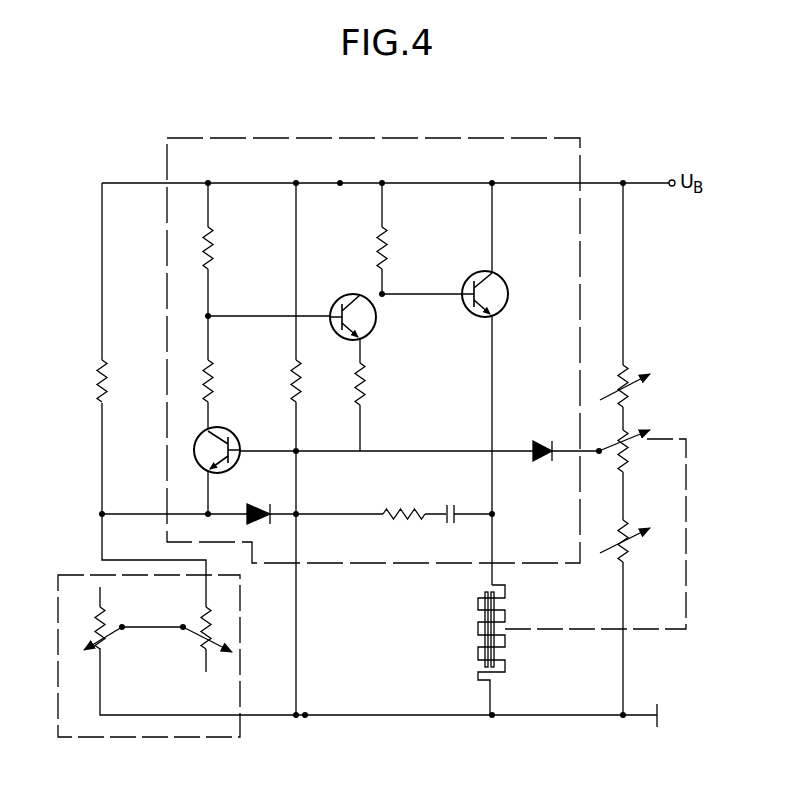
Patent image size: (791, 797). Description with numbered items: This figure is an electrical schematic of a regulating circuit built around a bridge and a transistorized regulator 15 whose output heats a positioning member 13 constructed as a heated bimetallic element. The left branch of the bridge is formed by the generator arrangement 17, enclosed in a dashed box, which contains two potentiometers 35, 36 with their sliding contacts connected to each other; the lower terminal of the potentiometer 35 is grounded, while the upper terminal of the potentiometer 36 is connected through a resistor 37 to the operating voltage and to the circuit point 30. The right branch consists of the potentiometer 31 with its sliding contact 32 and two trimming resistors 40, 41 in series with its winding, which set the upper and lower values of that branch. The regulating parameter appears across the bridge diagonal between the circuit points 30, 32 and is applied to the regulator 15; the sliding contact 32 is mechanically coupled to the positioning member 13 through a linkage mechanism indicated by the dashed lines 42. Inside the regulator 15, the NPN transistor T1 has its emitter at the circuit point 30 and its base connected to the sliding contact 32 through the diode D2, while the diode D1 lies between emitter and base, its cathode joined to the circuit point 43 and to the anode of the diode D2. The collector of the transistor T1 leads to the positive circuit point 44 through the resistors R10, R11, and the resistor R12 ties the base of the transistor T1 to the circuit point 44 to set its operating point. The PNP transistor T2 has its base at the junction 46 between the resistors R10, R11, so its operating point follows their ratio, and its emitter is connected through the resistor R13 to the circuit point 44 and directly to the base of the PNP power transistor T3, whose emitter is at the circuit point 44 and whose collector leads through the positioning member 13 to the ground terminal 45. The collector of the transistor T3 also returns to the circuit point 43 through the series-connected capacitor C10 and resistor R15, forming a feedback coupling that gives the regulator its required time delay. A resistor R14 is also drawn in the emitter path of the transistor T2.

The regulator 15 is at (514, 150).
The generator arrangement 17 is at (140, 726).
The linkage mechanism 42 is at (663, 630).
The positioning member 13 is at (472, 612).
The circuit point 30 is at (102, 514).
The potentiometer 31 is at (630, 458).
The sliding contact 32 is at (599, 454).
The potentiometer 35 is at (106, 616).
The potentiometer 36 is at (200, 640).
The resistor 37 is at (107, 376).
The trimming resistor 40 is at (630, 398).
The trimming resistor 41 is at (630, 556).
The circuit point 43 is at (296, 514).
The circuit point 44 is at (340, 183).
The terminal 45 is at (305, 715).
The junction 46 is at (208, 316).
The resistor R10 is at (213, 376).
The resistor R11 is at (213, 243).
The resistor R12 is at (301, 393).
The resistor R13 is at (387, 243).
The resistor R14 is at (365, 378).
The resistor R15 is at (404, 508).
The capacitor C10 is at (448, 524).
The diode D1 is at (262, 522).
The diode D2 is at (542, 440).
The transistor T1 is at (195, 428).
The transistor T2 is at (376, 322).
The power transistor T3 is at (508, 300).